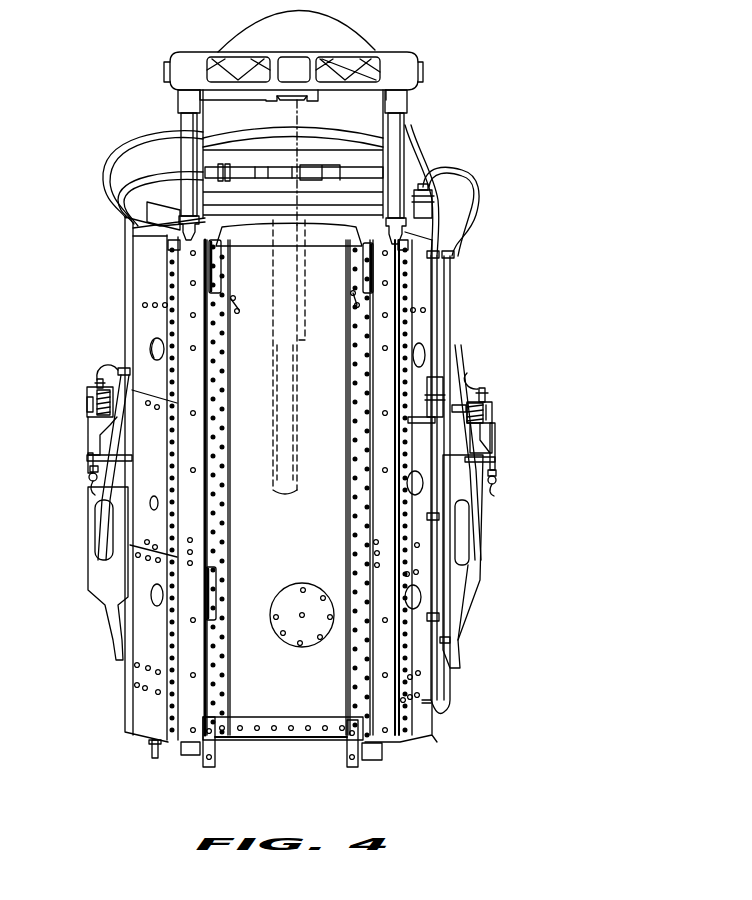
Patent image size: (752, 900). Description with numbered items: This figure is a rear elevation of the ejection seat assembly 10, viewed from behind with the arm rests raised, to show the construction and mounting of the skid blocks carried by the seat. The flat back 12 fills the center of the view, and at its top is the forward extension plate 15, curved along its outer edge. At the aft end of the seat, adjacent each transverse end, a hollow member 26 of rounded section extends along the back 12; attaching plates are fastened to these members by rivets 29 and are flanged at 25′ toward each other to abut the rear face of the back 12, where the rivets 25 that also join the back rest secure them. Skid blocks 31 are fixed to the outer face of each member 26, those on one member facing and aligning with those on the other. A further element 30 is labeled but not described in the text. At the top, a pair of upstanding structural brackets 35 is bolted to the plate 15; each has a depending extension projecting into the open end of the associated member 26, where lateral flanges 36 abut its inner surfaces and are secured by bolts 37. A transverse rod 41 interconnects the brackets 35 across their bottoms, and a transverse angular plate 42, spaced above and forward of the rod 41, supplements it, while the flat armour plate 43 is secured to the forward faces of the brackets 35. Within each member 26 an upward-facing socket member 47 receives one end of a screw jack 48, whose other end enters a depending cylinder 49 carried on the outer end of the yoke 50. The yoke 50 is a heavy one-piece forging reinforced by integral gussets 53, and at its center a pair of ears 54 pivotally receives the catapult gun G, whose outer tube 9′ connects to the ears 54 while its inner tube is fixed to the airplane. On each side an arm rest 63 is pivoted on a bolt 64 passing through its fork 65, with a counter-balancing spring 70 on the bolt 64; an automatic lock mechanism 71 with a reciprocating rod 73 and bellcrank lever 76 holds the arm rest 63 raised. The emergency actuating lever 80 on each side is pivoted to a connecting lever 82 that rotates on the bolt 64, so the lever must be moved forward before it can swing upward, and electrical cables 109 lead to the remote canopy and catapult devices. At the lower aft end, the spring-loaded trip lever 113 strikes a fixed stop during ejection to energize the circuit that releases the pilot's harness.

The seat assembly 10 is at (300, 537).
The back 12 is at (300, 712).
The forward extension plate 15 is at (150, 214).
The rivets 25 is at (224, 348).
The flanges of attaching plates 25′ is at (220, 446).
The hollow member 26 is at (140, 328).
The rivets 29 is at (170, 282).
The guide strip inner edge 30 is at (221, 486).
The skid blocks 31 is at (222, 262).
The structural brackets 35 is at (203, 107).
The lateral flanges 36 is at (176, 246).
The bolts 37 is at (238, 312).
The transverse rod 41 is at (305, 225).
The transverse angular plate 42 is at (306, 148).
The armour plate 43 is at (338, 37).
The socket member 47 is at (140, 228).
The screw jack 48 is at (180, 116).
The depending cylinder 49 is at (185, 129).
The yoke 50 is at (292, 57).
The gussets 53 is at (362, 51).
The ears 54 is at (304, 112).
The arm rest 63 is at (90, 436).
The pivot bolt 64 is at (88, 398).
The fork 65 is at (87, 458).
The counter-balancing spring 70 is at (100, 378).
The automatic lock mechanism 71 is at (89, 477).
The reciprocating rod 73 is at (93, 487).
The bellcrank lever 76 is at (90, 469).
The emergency actuating lever 80 is at (88, 586).
The connecting lever 82 is at (122, 370).
The electrical cables 109 is at (160, 176).
The trip lever 113 is at (150, 748).
The outer cylinder 9′ is at (305, 118).
The catapult gun G is at (306, 282).